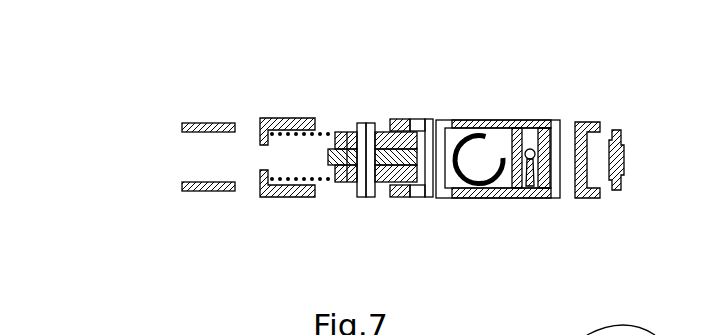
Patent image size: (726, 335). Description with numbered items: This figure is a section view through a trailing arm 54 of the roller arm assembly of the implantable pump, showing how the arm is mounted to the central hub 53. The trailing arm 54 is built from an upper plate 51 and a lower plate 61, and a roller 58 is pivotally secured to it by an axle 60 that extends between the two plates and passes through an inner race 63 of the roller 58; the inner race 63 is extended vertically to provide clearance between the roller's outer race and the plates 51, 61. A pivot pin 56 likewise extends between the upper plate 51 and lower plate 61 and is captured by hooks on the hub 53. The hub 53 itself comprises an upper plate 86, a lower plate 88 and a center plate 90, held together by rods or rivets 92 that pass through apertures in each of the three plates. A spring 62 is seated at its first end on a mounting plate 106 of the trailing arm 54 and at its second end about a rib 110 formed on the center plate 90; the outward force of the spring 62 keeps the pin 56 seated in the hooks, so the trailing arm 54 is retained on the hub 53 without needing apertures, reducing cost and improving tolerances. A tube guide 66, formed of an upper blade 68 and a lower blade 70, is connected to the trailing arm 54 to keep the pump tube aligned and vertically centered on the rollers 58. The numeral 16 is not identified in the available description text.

The housing 16 is at (640, 333).
The upper plate 51 is at (538, 120).
The central hub 53 is at (374, 112).
The trailing arm 54 is at (525, 113).
The pin 56 is at (440, 130).
The roller 58 is at (623, 160).
The axle 60 is at (570, 193).
The lower plate 61 is at (477, 193).
The spring 62 is at (330, 183).
The inner race 63 is at (538, 187).
The tube guide 66 is at (213, 112).
The upper blade 68 is at (195, 121).
The lower blade 70 is at (195, 182).
The upper plate 86 is at (388, 127).
The lower plate 88 is at (352, 183).
The center plate 90 is at (385, 180).
The rod or rivet 92 is at (360, 107).
The mounting plate 106 is at (263, 187).
The rib 110 is at (330, 155).